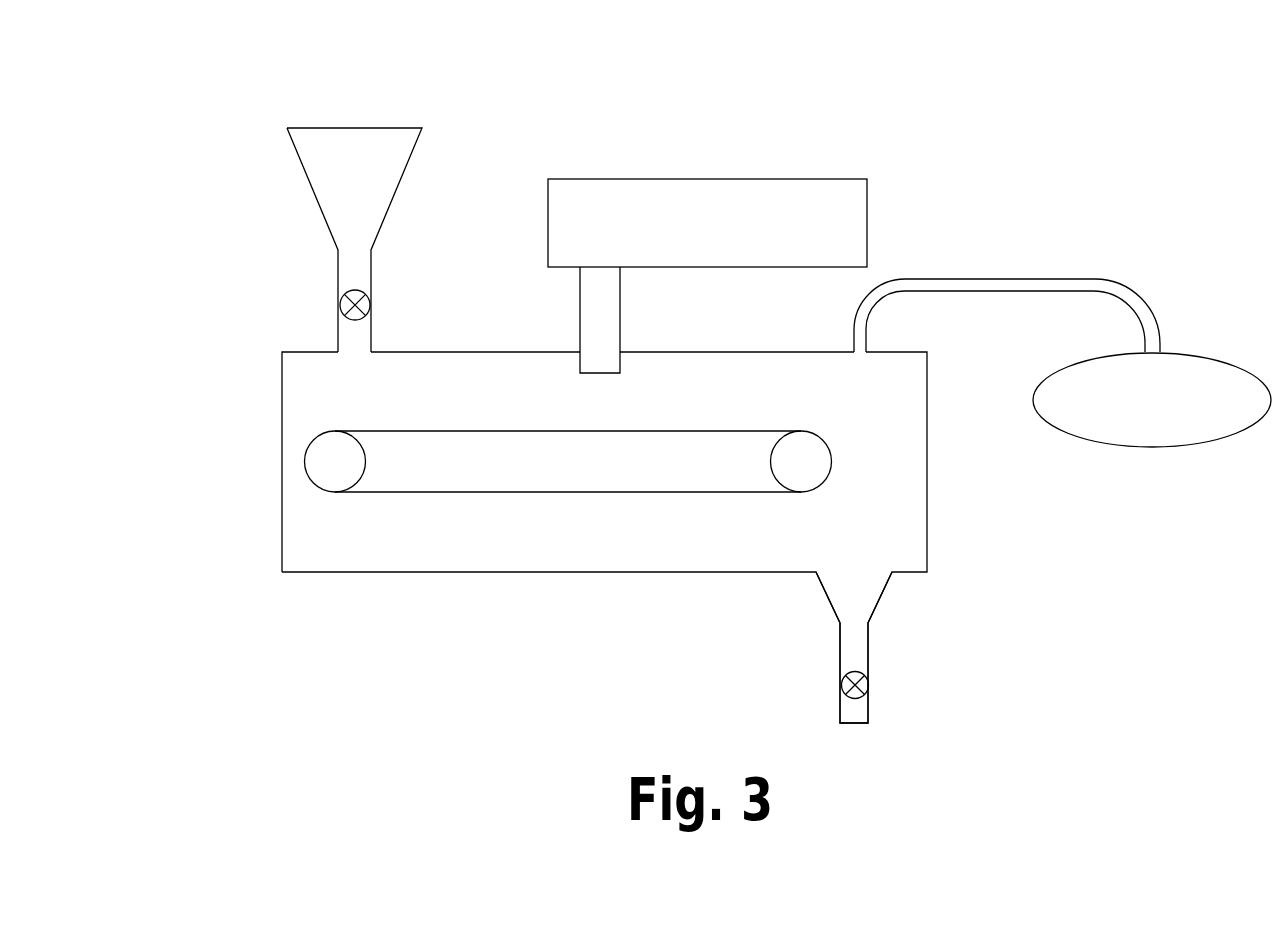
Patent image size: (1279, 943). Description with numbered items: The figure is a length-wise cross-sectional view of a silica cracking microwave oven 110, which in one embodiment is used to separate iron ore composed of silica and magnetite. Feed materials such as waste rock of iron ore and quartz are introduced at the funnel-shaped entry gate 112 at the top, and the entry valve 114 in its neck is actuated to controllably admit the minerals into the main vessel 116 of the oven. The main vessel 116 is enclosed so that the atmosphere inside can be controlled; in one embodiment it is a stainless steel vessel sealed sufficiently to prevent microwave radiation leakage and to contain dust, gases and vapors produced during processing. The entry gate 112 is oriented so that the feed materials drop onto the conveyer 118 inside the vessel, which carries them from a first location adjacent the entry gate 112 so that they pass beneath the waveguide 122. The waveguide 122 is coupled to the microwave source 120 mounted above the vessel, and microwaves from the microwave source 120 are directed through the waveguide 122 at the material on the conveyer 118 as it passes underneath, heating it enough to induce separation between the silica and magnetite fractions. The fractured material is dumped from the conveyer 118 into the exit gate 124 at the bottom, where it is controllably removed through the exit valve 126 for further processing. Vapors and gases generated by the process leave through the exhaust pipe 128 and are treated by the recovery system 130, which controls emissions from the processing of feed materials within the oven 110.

The microwave oven 110 is at (230, 96).
The entry gate 112 is at (382, 116).
The entry valve 114 is at (340, 304).
The main vessel 116 is at (517, 550).
The conveyer 118 is at (355, 508).
The microwave source 120 is at (782, 179).
The waveguide 122 is at (620, 320).
The exit gate 124 is at (880, 598).
The exit valve 126 is at (842, 683).
The exhaust pipe 128 is at (1003, 279).
The recovery system 130 is at (1197, 353).